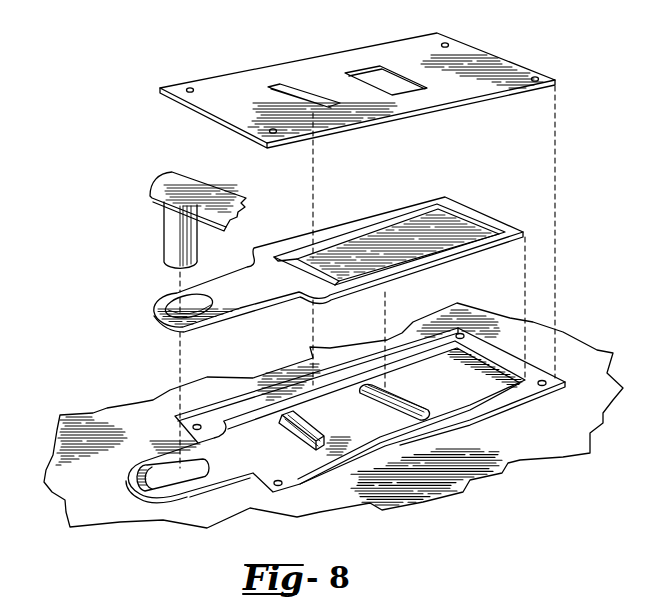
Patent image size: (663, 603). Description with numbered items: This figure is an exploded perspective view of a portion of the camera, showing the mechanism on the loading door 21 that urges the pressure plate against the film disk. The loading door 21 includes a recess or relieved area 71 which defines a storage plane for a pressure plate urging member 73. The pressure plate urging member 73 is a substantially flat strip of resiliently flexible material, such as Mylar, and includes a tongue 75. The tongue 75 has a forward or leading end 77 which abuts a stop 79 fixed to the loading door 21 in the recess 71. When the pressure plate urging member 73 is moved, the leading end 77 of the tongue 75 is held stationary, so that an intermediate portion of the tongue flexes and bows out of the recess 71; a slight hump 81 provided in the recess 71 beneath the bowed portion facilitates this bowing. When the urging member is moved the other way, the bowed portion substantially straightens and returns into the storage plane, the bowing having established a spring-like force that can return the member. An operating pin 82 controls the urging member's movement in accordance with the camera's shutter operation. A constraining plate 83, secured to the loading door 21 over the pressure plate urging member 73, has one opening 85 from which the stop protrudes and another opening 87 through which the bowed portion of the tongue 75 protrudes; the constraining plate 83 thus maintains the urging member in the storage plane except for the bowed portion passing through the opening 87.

The rear door 21 is at (87, 420).
The recess 71 is at (249, 435).
The pressure plate urging member 73 is at (338, 254).
The tongue 75 is at (333, 255).
The leading end 77 is at (302, 268).
The stop 79 is at (298, 440).
The hump 81 is at (408, 400).
The operating pin 82 is at (168, 225).
The constraining plate 83 is at (357, 79).
The opening 85 is at (294, 93).
The opening 87 is at (391, 78).